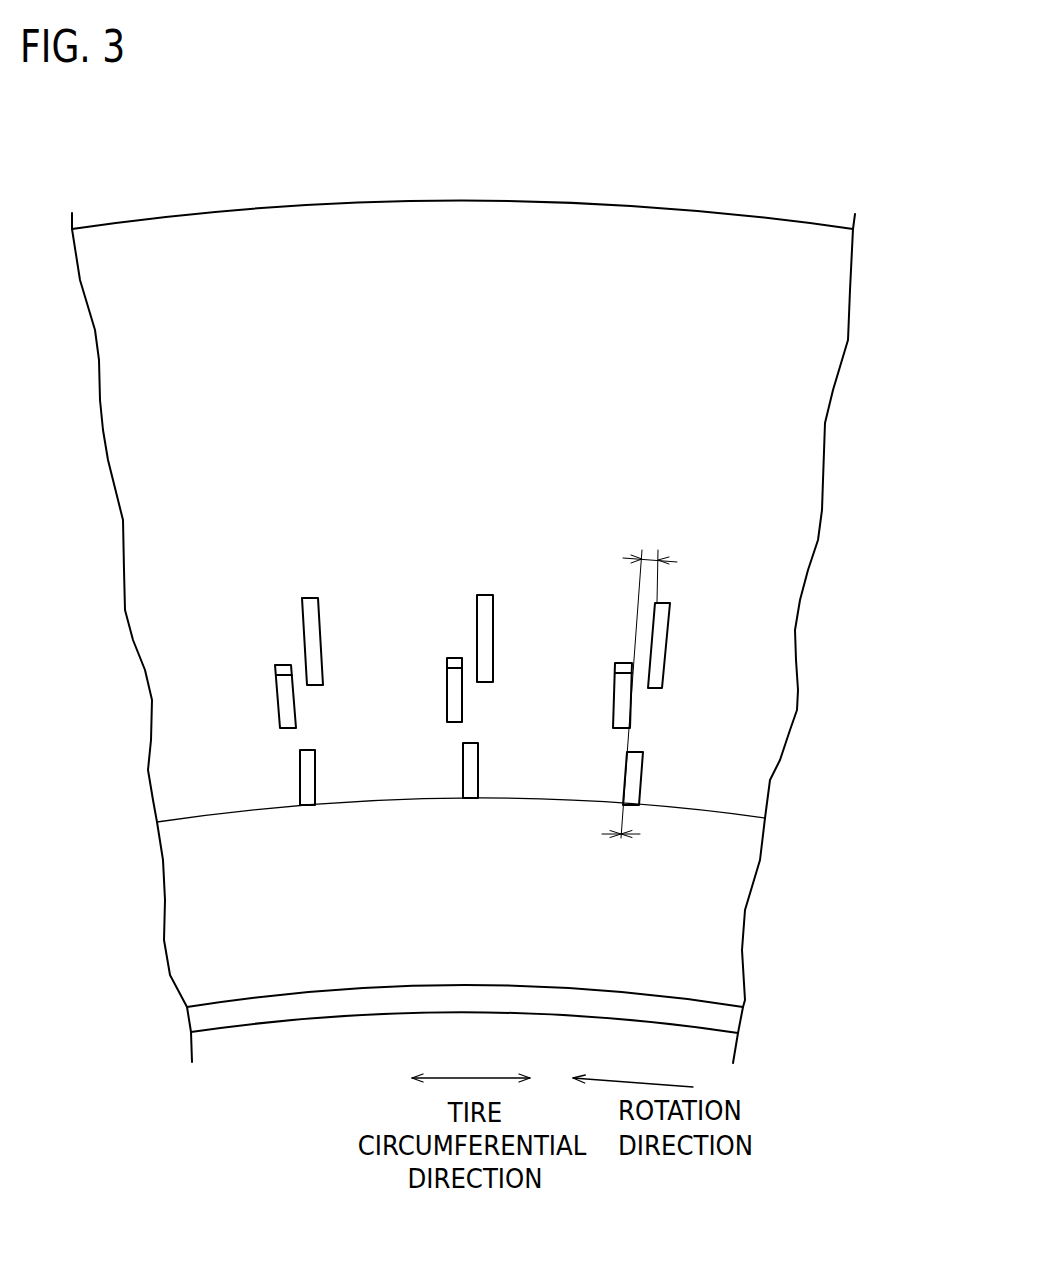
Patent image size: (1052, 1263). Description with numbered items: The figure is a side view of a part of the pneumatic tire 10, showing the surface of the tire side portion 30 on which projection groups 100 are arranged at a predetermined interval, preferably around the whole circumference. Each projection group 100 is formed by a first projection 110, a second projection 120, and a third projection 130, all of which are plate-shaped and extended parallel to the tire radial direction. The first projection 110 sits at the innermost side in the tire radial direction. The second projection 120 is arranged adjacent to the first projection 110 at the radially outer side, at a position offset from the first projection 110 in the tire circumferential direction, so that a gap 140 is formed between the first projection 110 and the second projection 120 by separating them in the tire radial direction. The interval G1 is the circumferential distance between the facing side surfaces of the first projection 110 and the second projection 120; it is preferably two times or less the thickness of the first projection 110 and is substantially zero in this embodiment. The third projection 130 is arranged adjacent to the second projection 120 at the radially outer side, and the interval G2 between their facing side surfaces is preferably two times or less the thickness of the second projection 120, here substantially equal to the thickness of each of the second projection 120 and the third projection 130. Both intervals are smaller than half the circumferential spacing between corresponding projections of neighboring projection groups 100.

The pneumatic tire 10 is at (625, 178).
The tire side portion 30 is at (760, 432).
The projection group 100 is at (470, 644).
The first projection 110 is at (470, 771).
The second projection 120 is at (455, 690).
The third projection 130 is at (483, 626).
The gap 140 is at (448, 736).
The interval G1 is at (621, 838).
The interval G2 is at (650, 558).